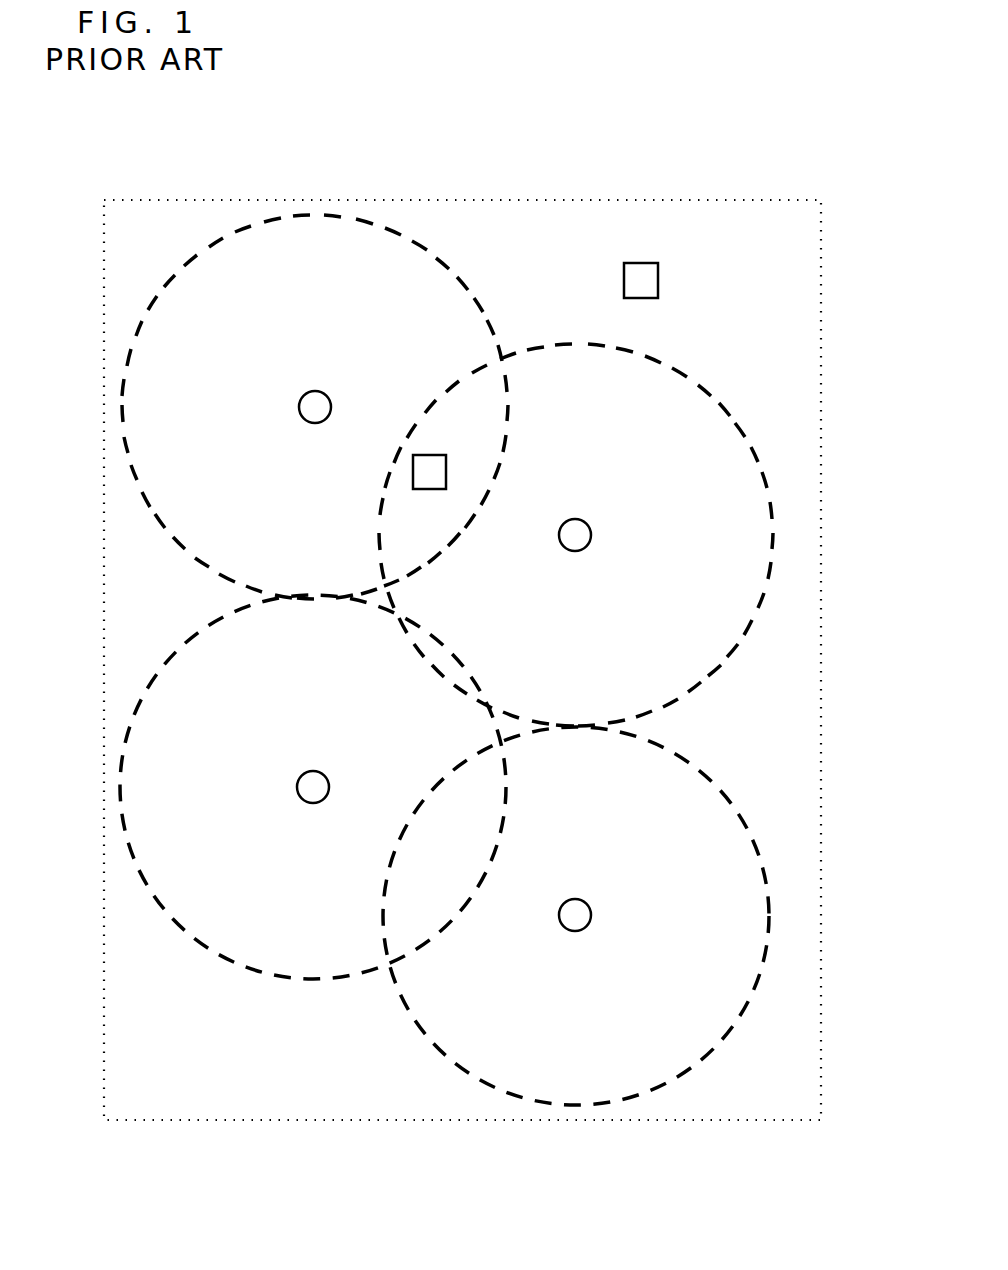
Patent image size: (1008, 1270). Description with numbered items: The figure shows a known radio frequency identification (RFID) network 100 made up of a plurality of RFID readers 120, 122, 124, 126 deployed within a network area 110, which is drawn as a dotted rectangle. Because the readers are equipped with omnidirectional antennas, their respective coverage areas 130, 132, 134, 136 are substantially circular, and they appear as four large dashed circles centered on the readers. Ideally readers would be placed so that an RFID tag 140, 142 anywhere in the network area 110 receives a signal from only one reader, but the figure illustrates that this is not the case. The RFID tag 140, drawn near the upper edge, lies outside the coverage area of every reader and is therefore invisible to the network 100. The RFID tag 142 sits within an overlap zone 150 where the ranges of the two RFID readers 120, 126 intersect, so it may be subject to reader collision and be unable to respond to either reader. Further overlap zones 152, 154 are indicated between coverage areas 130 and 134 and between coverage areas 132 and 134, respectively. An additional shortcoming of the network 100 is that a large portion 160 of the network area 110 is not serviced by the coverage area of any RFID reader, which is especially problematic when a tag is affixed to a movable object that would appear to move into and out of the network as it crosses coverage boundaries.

The RFID network 100 is at (577, 170).
The network area 110 is at (792, 200).
The RFID reader 120 is at (591, 528).
The RFID reader 122 is at (591, 910).
The RFID reader 124 is at (297, 790).
The RFID reader 126 is at (299, 398).
The coverage area 130 is at (723, 412).
The coverage area 132 is at (743, 815).
The coverage area 134 is at (152, 895).
The coverage area 136 is at (150, 510).
The RFID tag 140 is at (656, 263).
The RFID tag 142 is at (413, 470).
The overlap zone 150 is at (462, 425).
The overlap zone 152 is at (427, 645).
The overlap zone 154 is at (427, 900).
The large portion of network area 160 is at (543, 265).